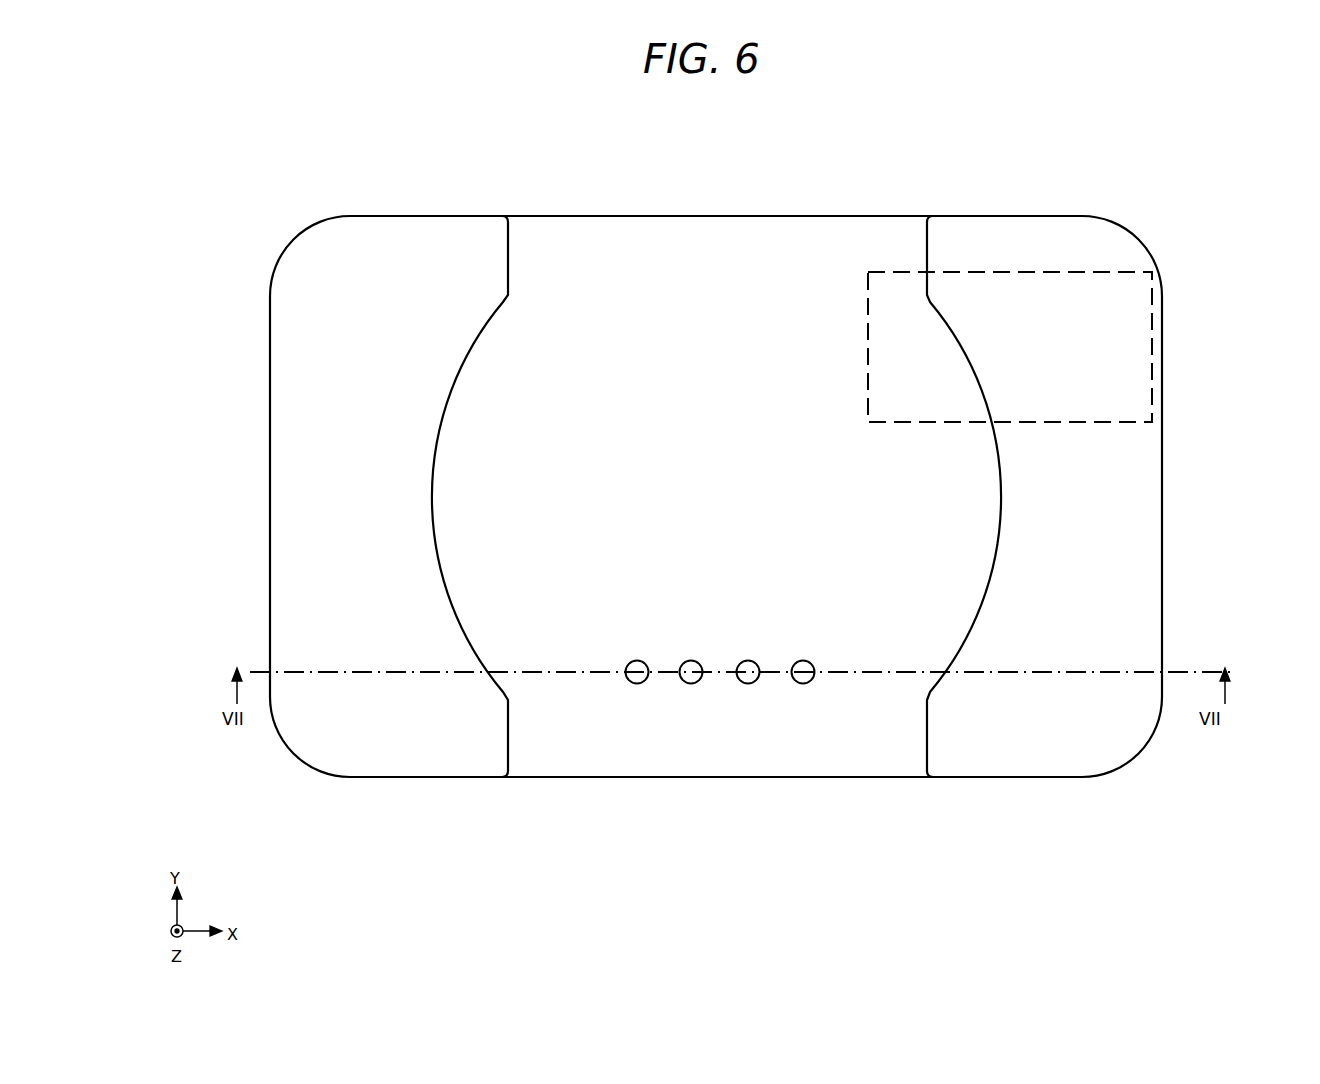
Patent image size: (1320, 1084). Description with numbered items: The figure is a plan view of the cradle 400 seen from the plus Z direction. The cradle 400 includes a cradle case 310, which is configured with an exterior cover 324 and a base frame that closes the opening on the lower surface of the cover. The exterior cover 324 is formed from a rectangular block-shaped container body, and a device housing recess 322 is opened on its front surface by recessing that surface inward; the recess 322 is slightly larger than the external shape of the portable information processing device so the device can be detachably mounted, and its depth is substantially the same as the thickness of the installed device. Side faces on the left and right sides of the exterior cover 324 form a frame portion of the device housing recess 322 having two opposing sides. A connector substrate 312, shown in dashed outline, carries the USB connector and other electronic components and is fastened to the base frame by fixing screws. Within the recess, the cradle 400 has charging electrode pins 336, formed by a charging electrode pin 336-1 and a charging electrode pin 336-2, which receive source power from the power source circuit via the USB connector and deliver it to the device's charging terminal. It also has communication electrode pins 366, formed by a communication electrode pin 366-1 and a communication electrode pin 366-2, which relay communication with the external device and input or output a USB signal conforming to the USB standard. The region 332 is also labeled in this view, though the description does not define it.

The cradle 400 is at (1040, 137).
The cradle case 310 is at (675, 505).
The connector substrate 312 is at (1110, 305).
The device housing recess 322 is at (566, 250).
The exterior cover 324 is at (367, 722).
The flange portion 332 is at (885, 700).
The charging electrode pins 336 is at (733, 797).
The charging electrode pin 336-1 is at (748, 684).
The charging electrode pin 336-2 is at (803, 684).
The communication electrode pins 366 is at (616, 771).
The communication electrode pin 366-1 is at (637, 684).
The communication electrode pin 366-2 is at (691, 684).